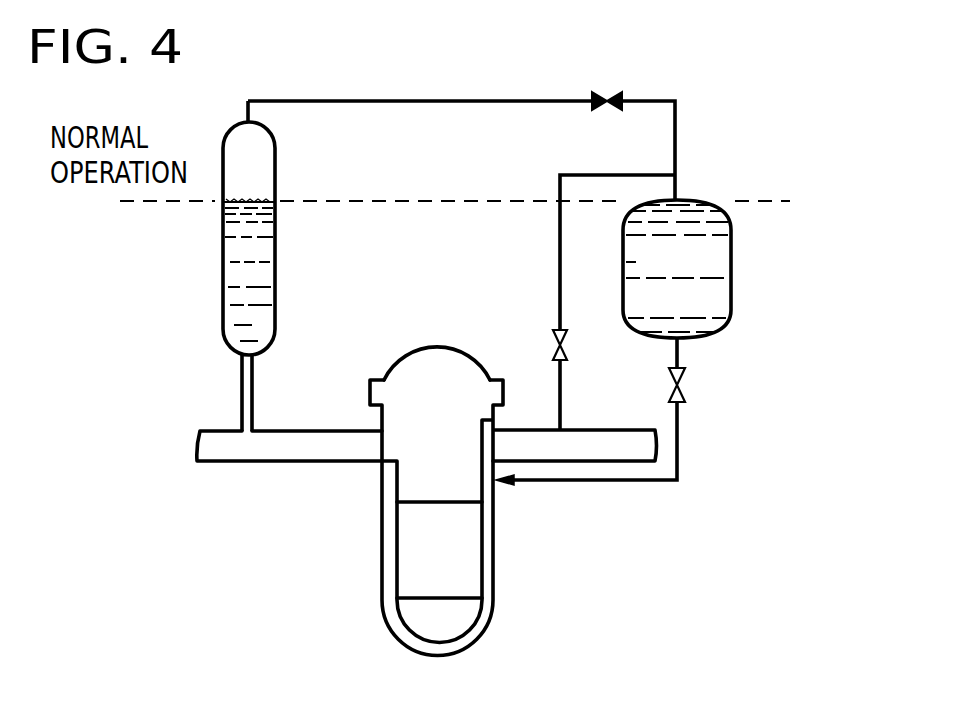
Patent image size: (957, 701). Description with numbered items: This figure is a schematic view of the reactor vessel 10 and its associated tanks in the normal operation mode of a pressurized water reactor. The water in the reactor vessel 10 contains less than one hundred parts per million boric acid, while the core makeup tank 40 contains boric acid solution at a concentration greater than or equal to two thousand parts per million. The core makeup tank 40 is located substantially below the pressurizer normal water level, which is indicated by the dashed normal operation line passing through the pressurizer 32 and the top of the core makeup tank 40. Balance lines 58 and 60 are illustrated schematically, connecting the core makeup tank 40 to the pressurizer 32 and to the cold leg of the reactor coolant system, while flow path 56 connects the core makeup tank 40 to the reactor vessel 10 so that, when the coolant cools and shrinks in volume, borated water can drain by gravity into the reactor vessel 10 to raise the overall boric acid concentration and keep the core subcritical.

The reactor vessel 10 is at (497, 602).
The core makeup tank 32 is at (223, 247).
The core makeup tank 40 is at (731, 290).
The flow path 56 is at (600, 480).
The balance line 58 is at (425, 100).
The balance line 60 is at (577, 175).